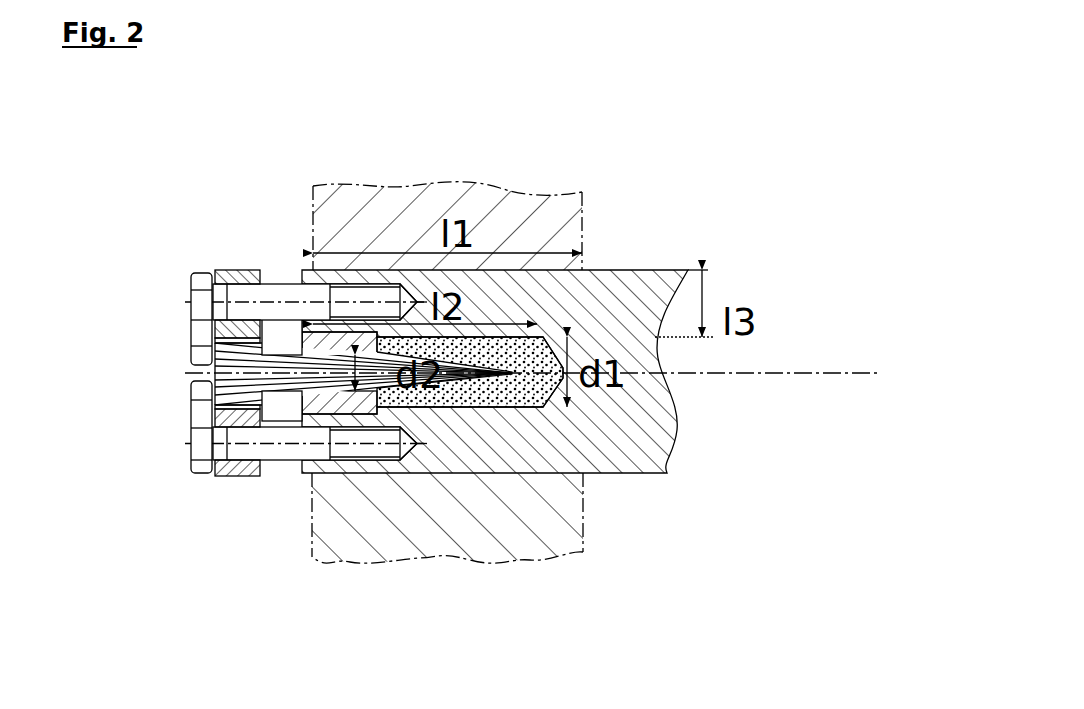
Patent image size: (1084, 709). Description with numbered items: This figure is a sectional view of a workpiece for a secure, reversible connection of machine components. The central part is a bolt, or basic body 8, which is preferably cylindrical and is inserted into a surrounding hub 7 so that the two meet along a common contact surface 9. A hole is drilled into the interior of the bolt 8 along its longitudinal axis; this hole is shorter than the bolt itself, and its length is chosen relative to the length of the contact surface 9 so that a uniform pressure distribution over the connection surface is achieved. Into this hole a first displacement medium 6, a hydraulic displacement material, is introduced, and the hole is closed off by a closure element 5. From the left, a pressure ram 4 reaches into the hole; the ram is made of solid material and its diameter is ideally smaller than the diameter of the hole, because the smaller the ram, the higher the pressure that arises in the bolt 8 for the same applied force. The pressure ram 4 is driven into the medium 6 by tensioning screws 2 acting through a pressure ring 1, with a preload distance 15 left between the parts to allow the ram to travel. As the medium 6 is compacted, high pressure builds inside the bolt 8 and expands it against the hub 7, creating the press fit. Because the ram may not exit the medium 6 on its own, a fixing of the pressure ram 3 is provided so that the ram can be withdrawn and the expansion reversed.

The pressure ring 1 is at (240, 472).
The tensioning screw 2 is at (203, 457).
The fixing of pressure ram 3 is at (213, 418).
The pressure ram 4 is at (238, 358).
The closure element 5 is at (318, 333).
The first displacement medium, hydraulic displacement material 6 is at (470, 345).
The hub 7 is at (495, 212).
The bolt, basic body 8 is at (553, 307).
The contact surface 9 is at (563, 475).
The preload distance 15 is at (280, 420).